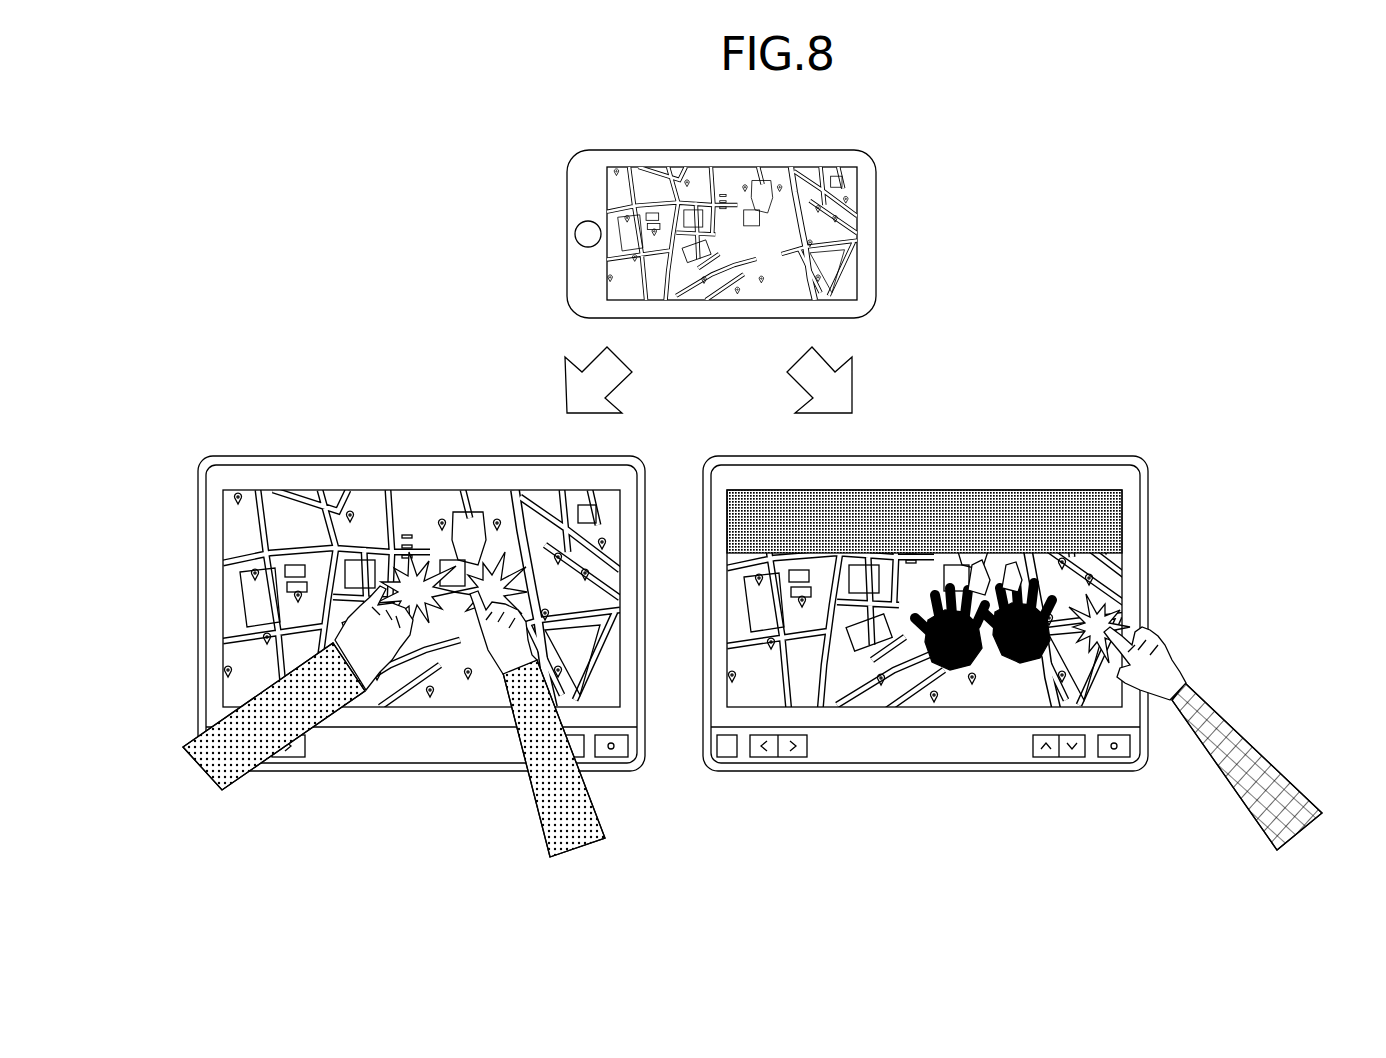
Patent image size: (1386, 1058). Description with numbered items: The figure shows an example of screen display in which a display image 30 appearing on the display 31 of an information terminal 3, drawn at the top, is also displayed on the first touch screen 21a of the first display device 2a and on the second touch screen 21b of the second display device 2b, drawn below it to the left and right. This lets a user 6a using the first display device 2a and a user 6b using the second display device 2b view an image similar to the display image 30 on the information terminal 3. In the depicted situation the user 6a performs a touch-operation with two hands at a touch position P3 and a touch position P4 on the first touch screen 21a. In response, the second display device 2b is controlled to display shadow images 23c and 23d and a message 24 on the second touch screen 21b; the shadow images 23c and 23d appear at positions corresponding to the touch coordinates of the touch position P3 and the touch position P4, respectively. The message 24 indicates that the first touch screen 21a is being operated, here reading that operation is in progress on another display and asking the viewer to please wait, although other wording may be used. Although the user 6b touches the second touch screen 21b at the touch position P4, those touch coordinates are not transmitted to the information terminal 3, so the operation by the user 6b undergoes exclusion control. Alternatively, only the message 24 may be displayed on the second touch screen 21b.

The information terminal 3 is at (878, 186).
The display 31 is at (857, 228).
The display image 30 is at (840, 268).
The first display device 2a is at (418, 457).
The first touch screen 21a is at (318, 490).
The touch position P3 is at (420, 700).
The touch position P4 is at (513, 507).
The user 6a is at (215, 790).
The second display device 2b is at (920, 457).
The second touch screen 21b is at (1087, 490).
The message 24 is at (1007, 495).
The shadow image 23c is at (955, 707).
The shadow image 23d is at (1028, 707).
The user 6b is at (1222, 790).